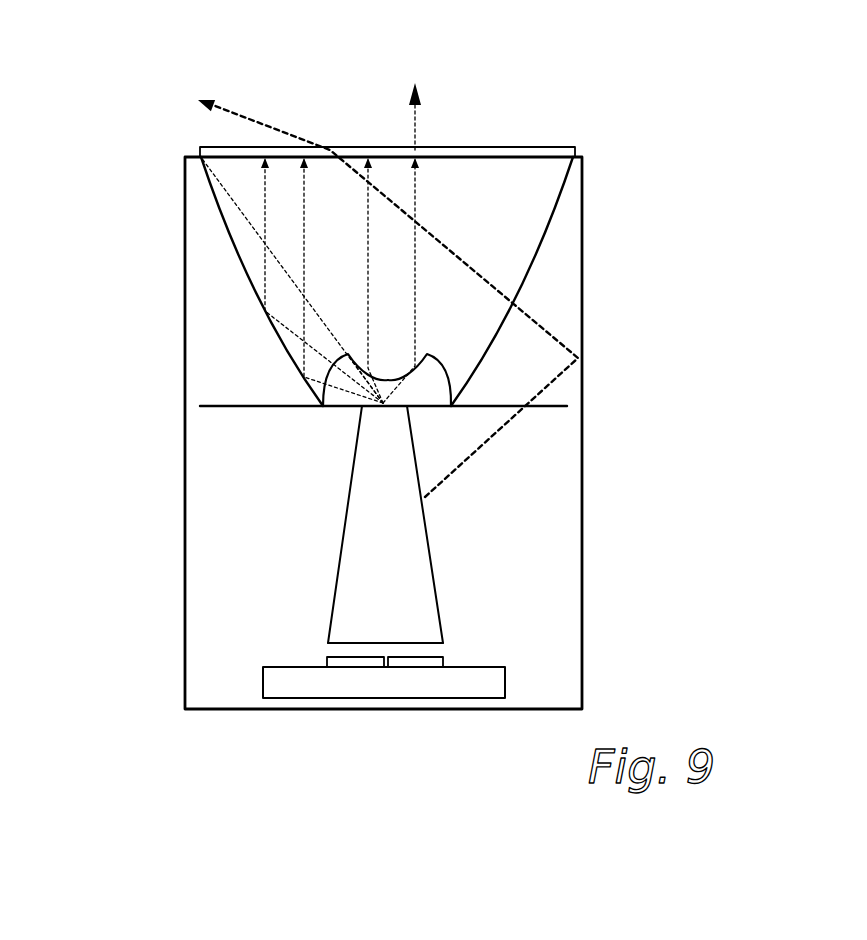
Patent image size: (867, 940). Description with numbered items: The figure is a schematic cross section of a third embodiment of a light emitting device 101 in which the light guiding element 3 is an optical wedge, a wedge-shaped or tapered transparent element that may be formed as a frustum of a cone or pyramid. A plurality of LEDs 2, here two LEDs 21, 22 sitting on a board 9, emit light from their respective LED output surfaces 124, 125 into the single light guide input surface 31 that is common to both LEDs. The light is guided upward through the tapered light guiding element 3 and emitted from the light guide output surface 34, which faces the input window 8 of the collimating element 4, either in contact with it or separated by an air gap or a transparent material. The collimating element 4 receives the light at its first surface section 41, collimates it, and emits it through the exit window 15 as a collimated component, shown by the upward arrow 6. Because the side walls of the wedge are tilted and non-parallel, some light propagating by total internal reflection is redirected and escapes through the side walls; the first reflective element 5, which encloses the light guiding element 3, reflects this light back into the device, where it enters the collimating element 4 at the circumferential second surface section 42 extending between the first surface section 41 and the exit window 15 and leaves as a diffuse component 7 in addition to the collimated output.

The light emitting device 101 is at (104, 278).
The first reflective element 5 is at (583, 462).
The exit window 15 is at (527, 153).
The collimating element 4 is at (553, 213).
The second surface section 42 is at (250, 270).
The input window 8 is at (240, 406).
The light guide output surface 34 is at (395, 407).
The first surface section 41 is at (424, 407).
The light ray exiting upward 6 is at (413, 118).
The diffuse component 7 is at (235, 112).
The plurality of LEDs 2 is at (500, 620).
The light guiding element 3 is at (443, 628).
The light guide input surface 31 is at (375, 642).
The LED output surface 124 is at (347, 652).
The LED output surface 125 is at (405, 652).
The LED 21 is at (357, 667).
The LED 22 is at (422, 667).
The circuit board 9 is at (485, 666).